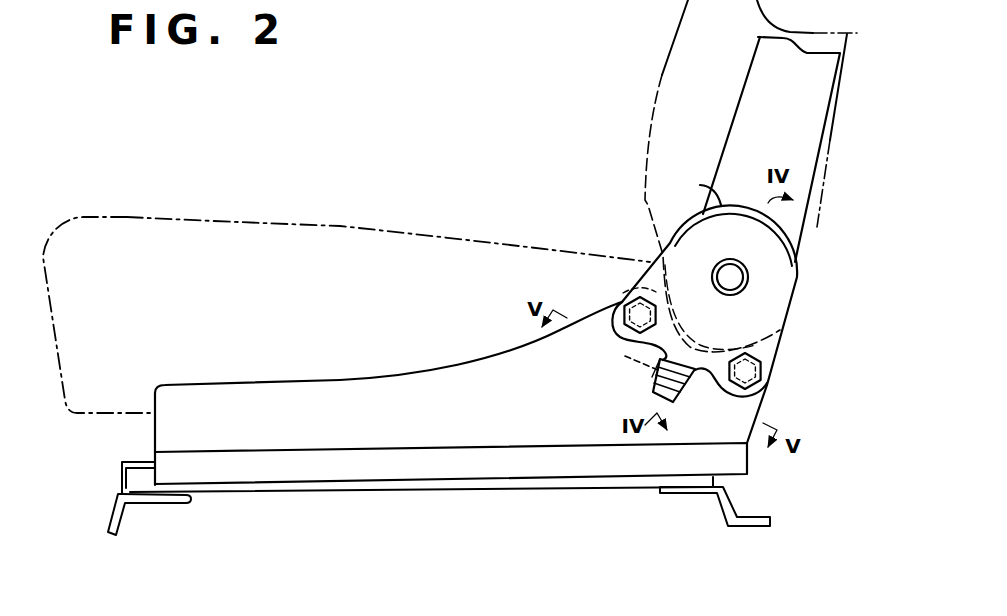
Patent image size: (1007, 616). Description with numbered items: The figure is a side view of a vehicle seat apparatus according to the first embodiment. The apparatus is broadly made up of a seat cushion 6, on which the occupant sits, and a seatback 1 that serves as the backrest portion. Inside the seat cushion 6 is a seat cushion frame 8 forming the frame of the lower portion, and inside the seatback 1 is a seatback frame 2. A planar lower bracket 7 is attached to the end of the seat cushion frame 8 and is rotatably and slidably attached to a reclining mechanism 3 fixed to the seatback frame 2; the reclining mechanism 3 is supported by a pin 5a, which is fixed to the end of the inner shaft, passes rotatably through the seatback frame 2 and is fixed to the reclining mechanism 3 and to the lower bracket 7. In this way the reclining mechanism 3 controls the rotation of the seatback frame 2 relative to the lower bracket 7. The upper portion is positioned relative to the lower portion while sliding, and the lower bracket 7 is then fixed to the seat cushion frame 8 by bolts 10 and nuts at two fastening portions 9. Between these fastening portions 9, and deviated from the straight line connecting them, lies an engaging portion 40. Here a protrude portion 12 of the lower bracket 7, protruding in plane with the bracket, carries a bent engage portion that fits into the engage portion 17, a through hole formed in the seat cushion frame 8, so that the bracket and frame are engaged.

The seatback 1 is at (662, 75).
The seatback frames 2 is at (747, 70).
The reclining mechanism 3 is at (707, 186).
The pin 5a is at (737, 276).
The seat cushion 6 is at (322, 225).
The lower bracket 7 is at (772, 247).
The seat cushion frame 8 is at (360, 376).
The fastening portions 9 is at (617, 299).
The bolts 10 is at (658, 314).
The protrude portion 12 is at (689, 383).
The seat cushion frame engage portion 17 is at (627, 355).
The engaging portion 40 is at (652, 377).